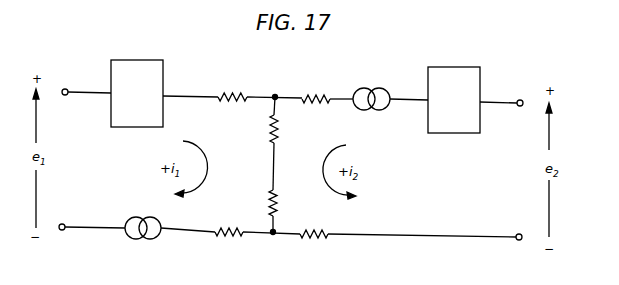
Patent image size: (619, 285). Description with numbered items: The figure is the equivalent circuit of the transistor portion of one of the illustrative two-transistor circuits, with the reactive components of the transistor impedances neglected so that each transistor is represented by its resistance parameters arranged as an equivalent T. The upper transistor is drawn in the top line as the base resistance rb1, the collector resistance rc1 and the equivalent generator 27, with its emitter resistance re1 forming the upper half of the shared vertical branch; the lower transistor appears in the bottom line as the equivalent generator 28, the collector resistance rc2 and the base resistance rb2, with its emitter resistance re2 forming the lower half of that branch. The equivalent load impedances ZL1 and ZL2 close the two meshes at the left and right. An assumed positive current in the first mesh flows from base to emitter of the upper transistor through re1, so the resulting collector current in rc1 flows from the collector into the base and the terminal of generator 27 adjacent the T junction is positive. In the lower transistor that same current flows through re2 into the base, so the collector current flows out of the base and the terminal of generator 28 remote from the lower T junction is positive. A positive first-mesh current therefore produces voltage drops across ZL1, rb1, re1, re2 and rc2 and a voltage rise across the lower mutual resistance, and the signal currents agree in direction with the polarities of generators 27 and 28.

The equivalent generator 27 is at (371, 110).
The equivalent generator 28 is at (143, 214).
The equivalent load impedance ZL1 is at (137, 93).
The equivalent load impedance ZL2 is at (454, 100).
The base resistance rb1 is at (232, 84).
The collector resistance rc1 is at (316, 89).
The emitter resistance re1 is at (286, 129).
The emitter resistance re2 is at (286, 203).
The collector resistance rc2 is at (229, 248).
The base resistance rb2 is at (314, 252).